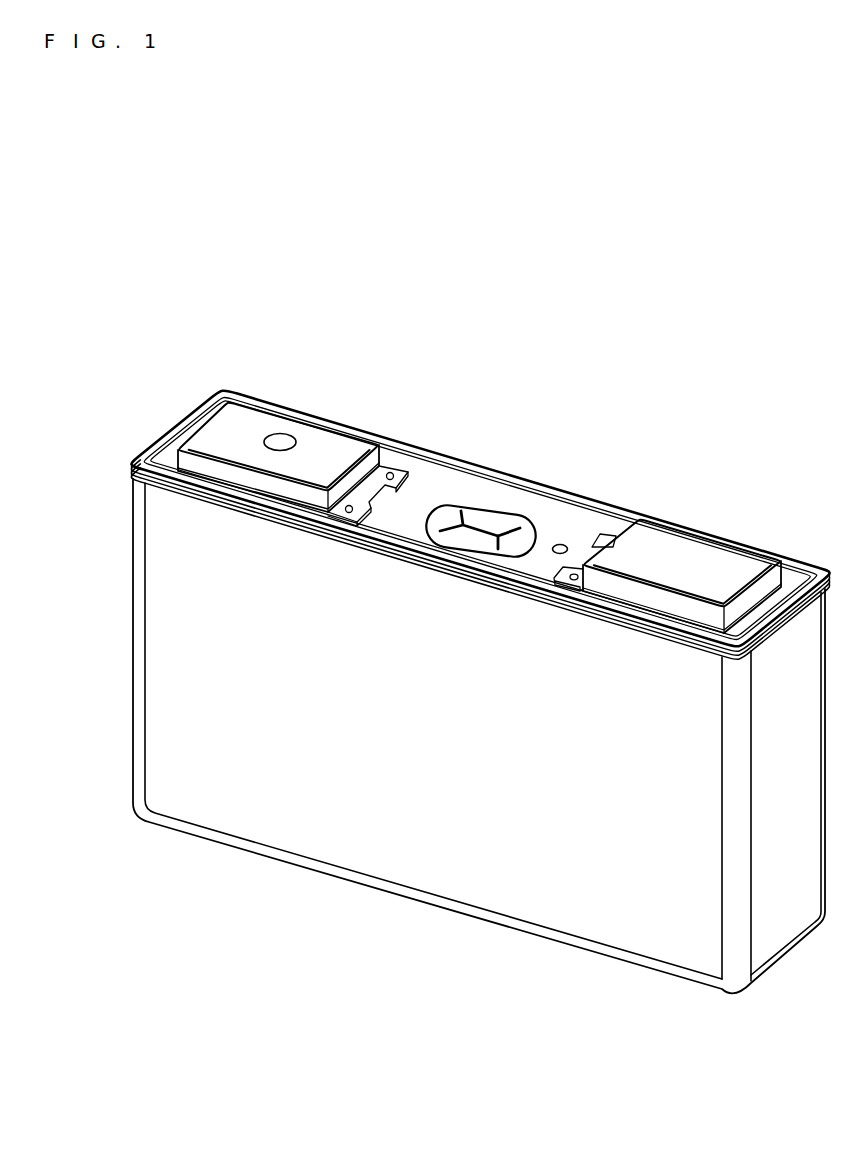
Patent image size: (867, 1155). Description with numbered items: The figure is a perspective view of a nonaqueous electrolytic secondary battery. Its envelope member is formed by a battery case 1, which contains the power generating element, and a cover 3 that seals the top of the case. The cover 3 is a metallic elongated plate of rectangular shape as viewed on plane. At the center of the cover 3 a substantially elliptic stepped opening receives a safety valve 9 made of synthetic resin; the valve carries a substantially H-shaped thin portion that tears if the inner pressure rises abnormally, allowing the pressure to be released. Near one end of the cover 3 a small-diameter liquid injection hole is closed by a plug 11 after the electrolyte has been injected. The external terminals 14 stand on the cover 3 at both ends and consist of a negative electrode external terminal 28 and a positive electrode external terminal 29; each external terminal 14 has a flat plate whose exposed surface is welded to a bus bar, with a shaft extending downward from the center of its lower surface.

The battery case 1 is at (453, 860).
The cover 3 is at (427, 480).
The safety valve 9 is at (492, 518).
The plug 11 is at (560, 540).
The external terminals 14 is at (534, 457).
The negative electrode external terminal 28 is at (262, 422).
The positive electrode external terminal 29 is at (647, 540).